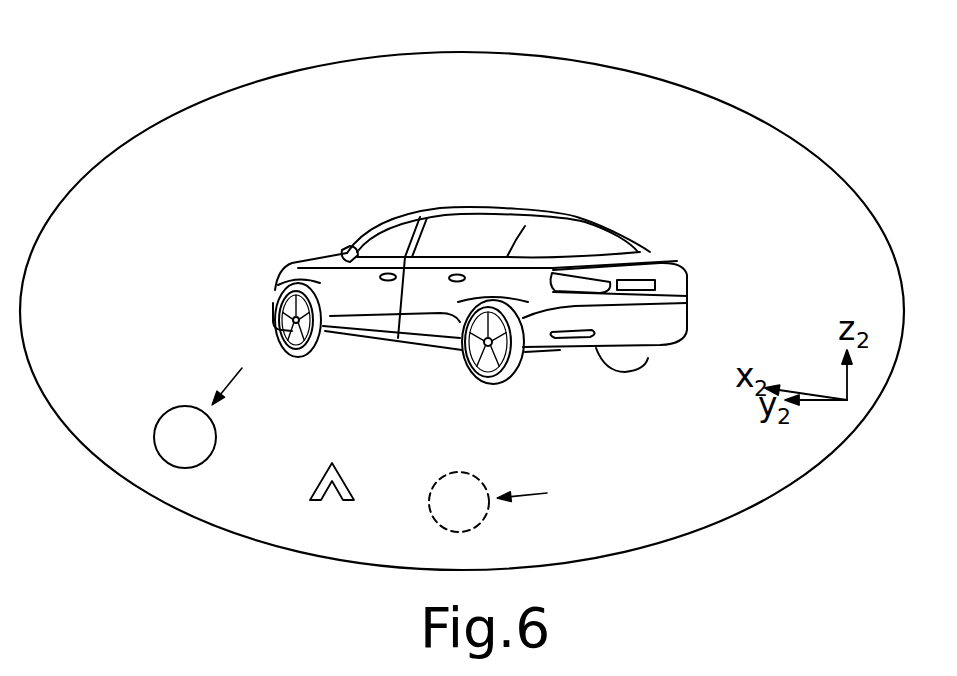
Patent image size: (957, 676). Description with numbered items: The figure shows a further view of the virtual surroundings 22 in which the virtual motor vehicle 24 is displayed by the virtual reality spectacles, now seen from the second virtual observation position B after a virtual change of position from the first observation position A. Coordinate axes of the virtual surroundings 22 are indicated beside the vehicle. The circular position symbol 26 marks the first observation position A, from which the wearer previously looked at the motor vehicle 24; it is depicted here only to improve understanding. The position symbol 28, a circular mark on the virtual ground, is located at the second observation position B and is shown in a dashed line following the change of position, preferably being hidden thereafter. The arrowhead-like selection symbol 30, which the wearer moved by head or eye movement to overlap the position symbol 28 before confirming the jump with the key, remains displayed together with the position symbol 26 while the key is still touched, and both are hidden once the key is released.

The virtual surroundings 22 is at (667, 82).
The virtual motor vehicle 24 is at (668, 207).
The position symbol 26 is at (203, 448).
The position symbol 28 is at (477, 516).
The selection symbol 30 is at (330, 502).